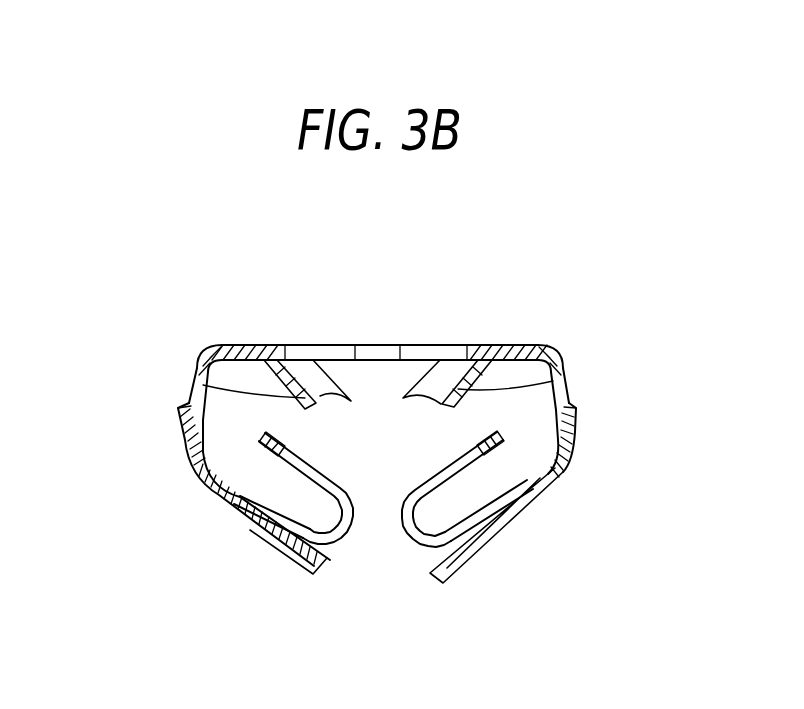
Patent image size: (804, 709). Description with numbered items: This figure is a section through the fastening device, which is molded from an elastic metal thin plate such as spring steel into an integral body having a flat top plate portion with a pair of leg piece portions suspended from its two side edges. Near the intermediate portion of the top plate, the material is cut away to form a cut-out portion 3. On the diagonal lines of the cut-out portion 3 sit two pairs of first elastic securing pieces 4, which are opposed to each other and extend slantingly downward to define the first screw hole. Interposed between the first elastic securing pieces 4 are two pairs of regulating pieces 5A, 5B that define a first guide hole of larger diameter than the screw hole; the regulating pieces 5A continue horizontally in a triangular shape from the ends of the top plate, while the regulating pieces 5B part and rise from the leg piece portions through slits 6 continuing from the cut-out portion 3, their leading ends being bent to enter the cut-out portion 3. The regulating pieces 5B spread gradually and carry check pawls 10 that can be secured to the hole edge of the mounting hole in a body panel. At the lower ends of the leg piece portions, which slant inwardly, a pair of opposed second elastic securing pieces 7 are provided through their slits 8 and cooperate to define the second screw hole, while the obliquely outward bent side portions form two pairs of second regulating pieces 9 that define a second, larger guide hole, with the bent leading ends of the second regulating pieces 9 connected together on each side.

The cut-out portion 3 is at (386, 422).
The first elastic securing pieces 4 is at (192, 375).
The first regulating pieces 5A is at (376, 345).
The first regulating pieces 5B is at (271, 346).
The slits 6 is at (186, 397).
The second elastic securing pieces 7 is at (318, 580).
The slits 8 is at (327, 468).
The second regulating pieces 9 is at (232, 500).
The check pawls 10 is at (178, 413).